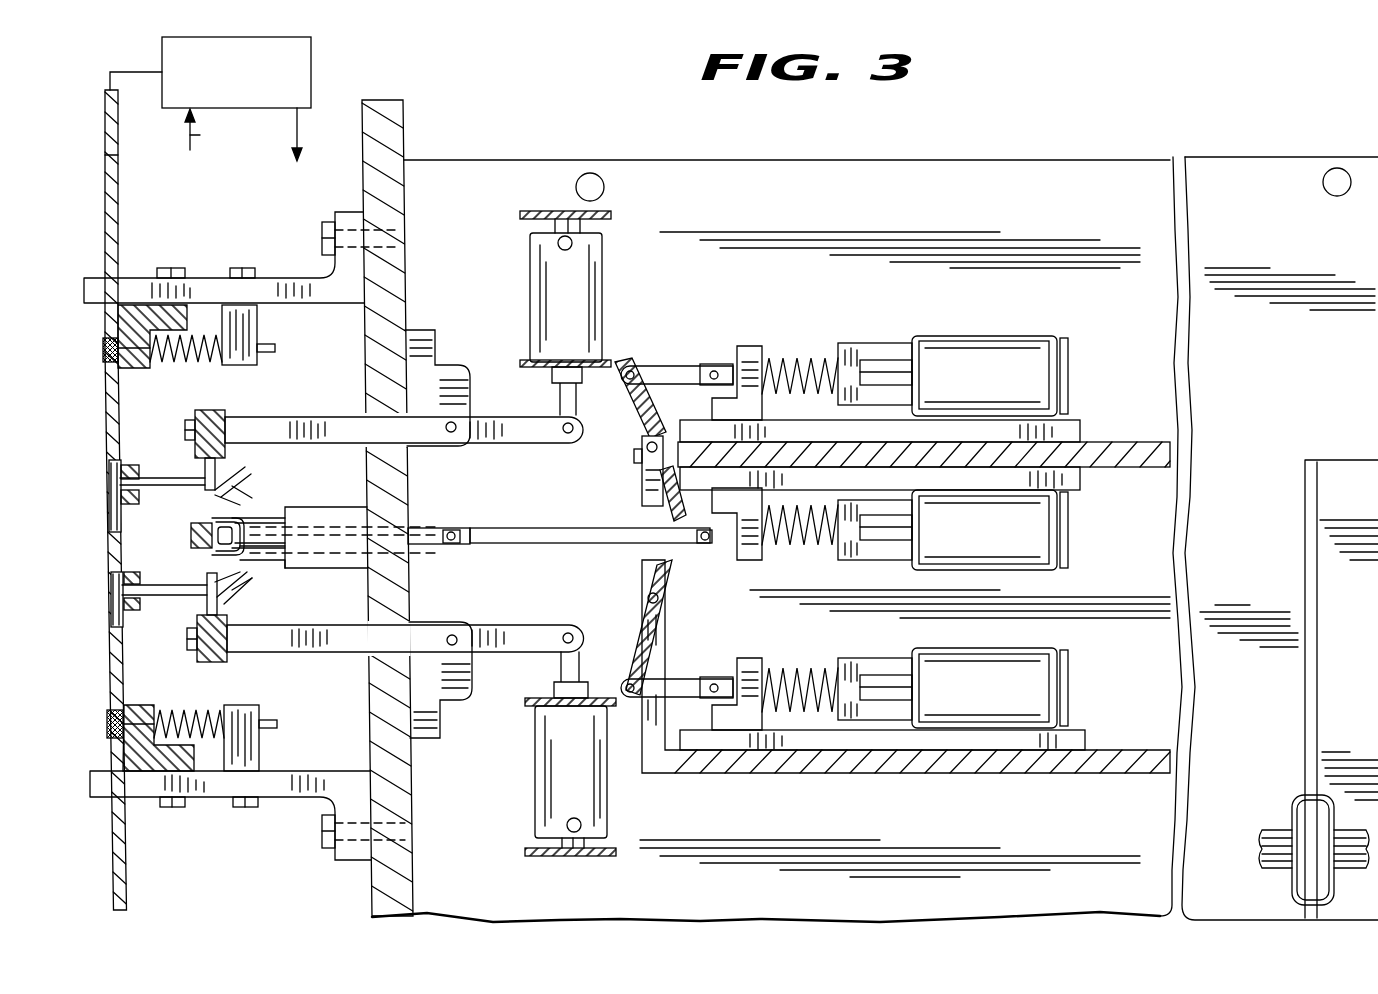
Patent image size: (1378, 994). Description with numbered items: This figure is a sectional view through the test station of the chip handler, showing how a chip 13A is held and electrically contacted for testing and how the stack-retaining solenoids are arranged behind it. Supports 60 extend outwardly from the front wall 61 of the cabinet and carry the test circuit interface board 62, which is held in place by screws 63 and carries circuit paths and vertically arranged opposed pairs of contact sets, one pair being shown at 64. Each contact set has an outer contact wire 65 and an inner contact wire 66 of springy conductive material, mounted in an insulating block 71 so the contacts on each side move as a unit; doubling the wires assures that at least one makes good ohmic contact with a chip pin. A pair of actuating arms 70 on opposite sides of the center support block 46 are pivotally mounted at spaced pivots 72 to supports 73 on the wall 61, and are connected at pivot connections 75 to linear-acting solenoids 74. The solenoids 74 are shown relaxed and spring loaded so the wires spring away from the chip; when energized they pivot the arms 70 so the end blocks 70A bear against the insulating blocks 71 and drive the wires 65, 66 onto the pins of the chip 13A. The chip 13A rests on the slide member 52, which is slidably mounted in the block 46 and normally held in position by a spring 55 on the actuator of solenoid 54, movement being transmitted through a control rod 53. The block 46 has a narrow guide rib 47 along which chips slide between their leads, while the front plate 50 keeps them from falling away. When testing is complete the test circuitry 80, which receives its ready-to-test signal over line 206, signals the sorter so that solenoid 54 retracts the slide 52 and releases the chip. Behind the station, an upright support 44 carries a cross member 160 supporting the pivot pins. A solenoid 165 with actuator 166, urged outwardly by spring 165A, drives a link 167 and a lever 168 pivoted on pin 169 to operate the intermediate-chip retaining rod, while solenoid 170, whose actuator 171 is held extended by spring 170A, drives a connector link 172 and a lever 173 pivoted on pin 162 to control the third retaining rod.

The test circuitry 80 is at (311, 70).
The line carrying ready to test signal 206 is at (216, 129).
The front wall 61 is at (386, 133).
The test circuit interface board 62 is at (106, 413).
The supports 60 is at (204, 293).
The screws 63 is at (103, 350).
The end blocks 70A is at (207, 412).
The actuating arms 70 is at (338, 430).
The insulating block 71 is at (204, 472).
The pair of contact sets 64 is at (96, 486).
The outer contact wire 65 is at (242, 480).
The inner contact wire 66 is at (236, 502).
The front plate 50 is at (191, 537).
The chip 13A is at (212, 556).
The slide member 52 is at (258, 518).
The support block 46 is at (314, 506).
The guide rib 47 is at (275, 552).
The control rod 53 is at (485, 546).
The supports 73 is at (436, 332).
The pivots 72 is at (453, 434).
The pivot connections 75 is at (556, 420).
The solenoid 74 is at (577, 284).
The link 167 is at (672, 374).
The actuator 166 is at (718, 366).
The lever 168 is at (641, 428).
The pivot pin 169 is at (638, 462).
The upright support 44 is at (1112, 442).
The spring 165A is at (806, 357).
The solenoid 165 is at (1000, 357).
The spring 55 is at (806, 552).
The solenoid 54 is at (1015, 558).
The cross member 160 is at (660, 773).
The pivot pin 162 is at (648, 598).
The lever 173 is at (672, 566).
The connector link 172 is at (688, 680).
The actuator 171 is at (733, 679).
The spring 170A is at (806, 672).
The solenoid 170 is at (1015, 666).